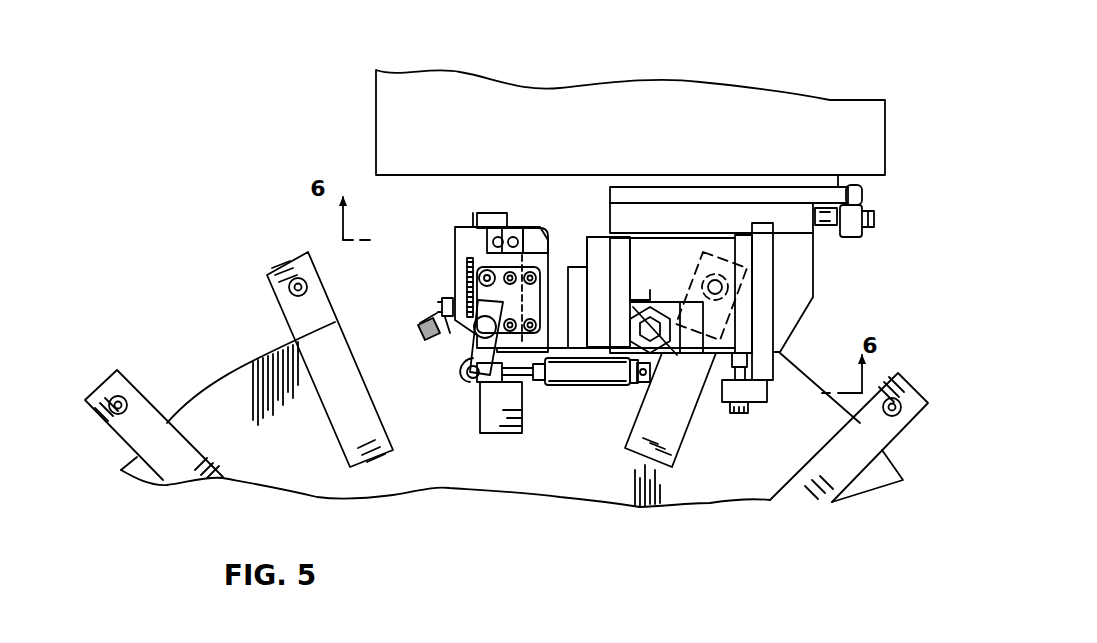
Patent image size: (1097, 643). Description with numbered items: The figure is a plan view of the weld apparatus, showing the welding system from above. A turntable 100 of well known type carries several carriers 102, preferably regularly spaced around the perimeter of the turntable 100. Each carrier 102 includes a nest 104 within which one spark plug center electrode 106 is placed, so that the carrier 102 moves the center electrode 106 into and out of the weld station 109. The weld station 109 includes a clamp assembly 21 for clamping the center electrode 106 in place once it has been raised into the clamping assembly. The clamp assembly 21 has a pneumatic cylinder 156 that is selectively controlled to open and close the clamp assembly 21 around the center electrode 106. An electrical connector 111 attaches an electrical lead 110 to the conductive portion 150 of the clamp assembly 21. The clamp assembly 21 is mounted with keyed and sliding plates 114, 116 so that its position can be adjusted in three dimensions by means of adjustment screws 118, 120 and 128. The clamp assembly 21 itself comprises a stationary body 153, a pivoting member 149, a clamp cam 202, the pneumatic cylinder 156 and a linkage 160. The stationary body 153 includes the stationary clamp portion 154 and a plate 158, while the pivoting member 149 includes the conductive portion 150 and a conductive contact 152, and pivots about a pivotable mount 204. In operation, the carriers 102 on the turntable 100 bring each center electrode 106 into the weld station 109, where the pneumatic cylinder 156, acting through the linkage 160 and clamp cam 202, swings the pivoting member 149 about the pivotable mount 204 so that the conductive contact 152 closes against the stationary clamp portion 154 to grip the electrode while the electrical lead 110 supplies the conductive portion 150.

The turntable 100 is at (440, 483).
The carrier 102 is at (485, 217).
The nest 104 is at (502, 240).
The spark plug center electrode 106 is at (511, 243).
The weld station 109 is at (565, 133).
The electrical lead 110 is at (423, 330).
The electrical connector 111 is at (445, 303).
The keyed and sliding plate 114 is at (798, 222).
The keyed and sliding plate 116 is at (763, 318).
The adjustment screw 118 is at (860, 227).
The adjustment screw 120 is at (742, 413).
The adjustment screw 128 is at (664, 356).
The pivoting member 149 is at (470, 222).
The conductive portion 150 is at (457, 250).
The conductive contact 152 is at (487, 240).
The stationary body 153 is at (554, 232).
The stationary clamp portion 154 is at (532, 240).
The pneumatic cylinder 156 is at (576, 388).
The plate 158 is at (473, 288).
The linkage 160 is at (462, 362).
The clamp cam 202 is at (452, 340).
The pivotable mount 204 is at (480, 277).
The clamp assembly 21 is at (450, 334).